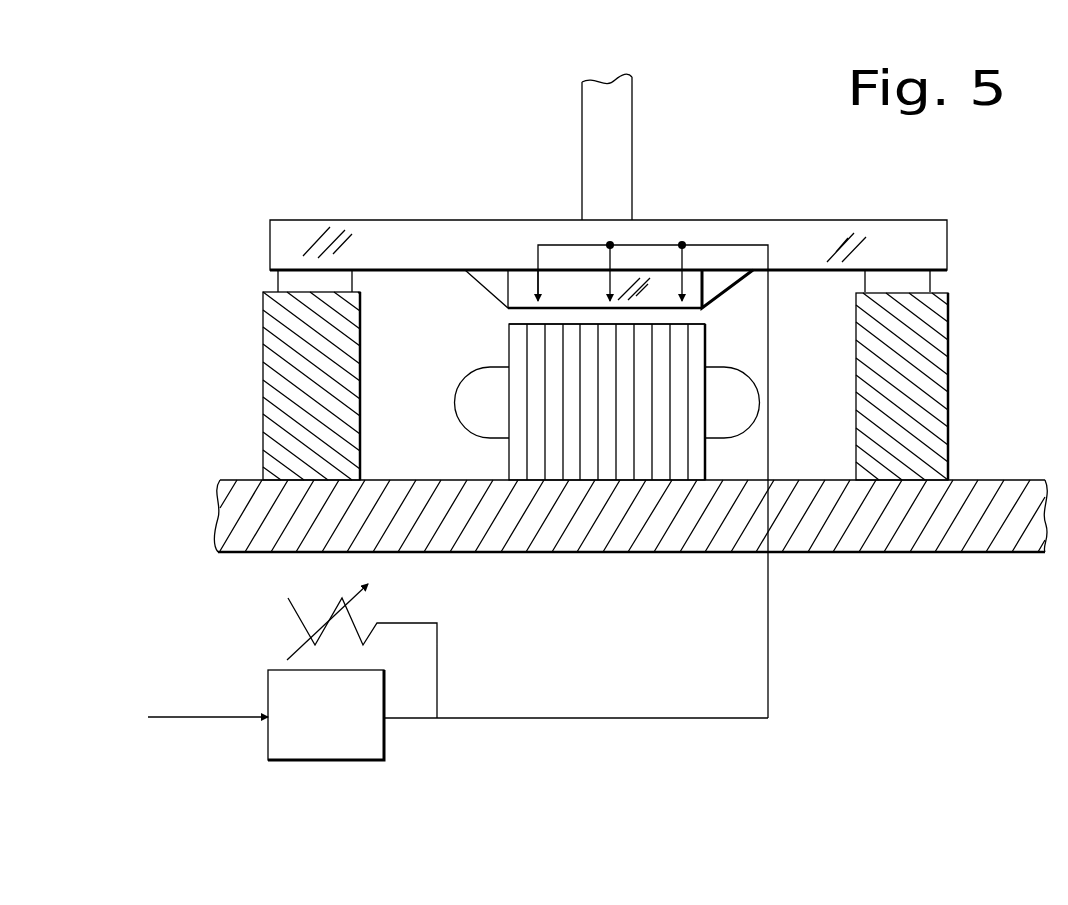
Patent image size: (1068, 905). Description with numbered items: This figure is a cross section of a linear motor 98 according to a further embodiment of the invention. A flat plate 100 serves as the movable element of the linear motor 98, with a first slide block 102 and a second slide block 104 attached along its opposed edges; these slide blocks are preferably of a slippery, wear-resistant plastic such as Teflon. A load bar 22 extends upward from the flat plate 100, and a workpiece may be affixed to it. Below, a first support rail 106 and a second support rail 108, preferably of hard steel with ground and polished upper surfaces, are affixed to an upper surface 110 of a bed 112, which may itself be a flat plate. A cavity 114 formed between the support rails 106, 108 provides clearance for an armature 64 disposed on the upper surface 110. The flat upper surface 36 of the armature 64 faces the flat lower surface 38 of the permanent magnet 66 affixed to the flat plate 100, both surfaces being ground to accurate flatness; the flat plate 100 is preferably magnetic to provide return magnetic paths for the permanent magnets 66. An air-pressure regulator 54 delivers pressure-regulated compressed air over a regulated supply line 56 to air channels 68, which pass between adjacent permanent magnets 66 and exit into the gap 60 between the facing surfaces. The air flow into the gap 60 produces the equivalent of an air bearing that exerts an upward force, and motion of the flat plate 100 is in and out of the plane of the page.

The load bar 22 is at (613, 135).
The flat upper surface 36 is at (568, 325).
The flat lower surface 38 is at (680, 312).
The air-pressure regulator 54 is at (385, 743).
The regulated supply line 56 is at (612, 717).
The gap 60 is at (513, 317).
The armature 64 is at (548, 462).
The permanent magnets 66 is at (517, 292).
The air channels 68 is at (683, 260).
The linear motor 98 is at (172, 242).
The flat plate 100 is at (902, 235).
The first slide block 102 is at (287, 278).
The second slide block 104 is at (917, 280).
The first support rail 106 is at (270, 363).
The second support rail 108 is at (932, 390).
The upper surface 110 is at (408, 478).
The bed 112 is at (902, 527).
The cavity 114 is at (800, 437).